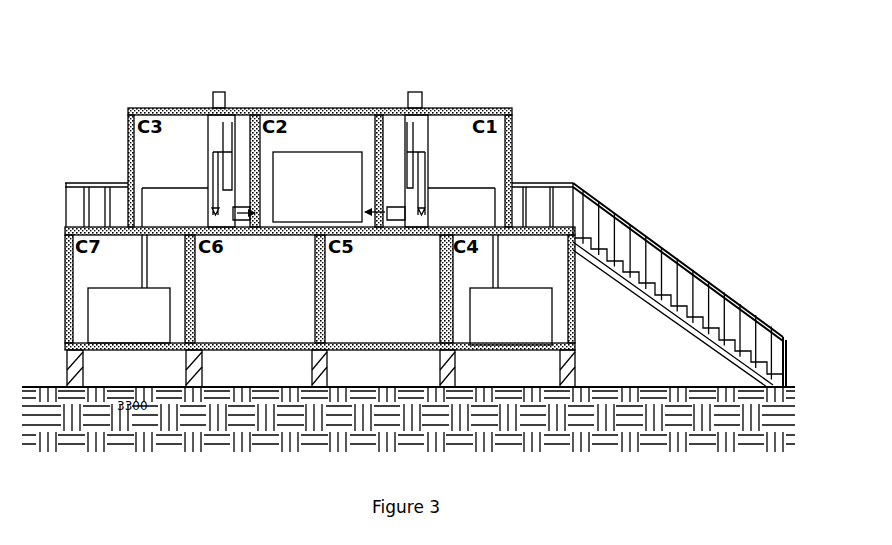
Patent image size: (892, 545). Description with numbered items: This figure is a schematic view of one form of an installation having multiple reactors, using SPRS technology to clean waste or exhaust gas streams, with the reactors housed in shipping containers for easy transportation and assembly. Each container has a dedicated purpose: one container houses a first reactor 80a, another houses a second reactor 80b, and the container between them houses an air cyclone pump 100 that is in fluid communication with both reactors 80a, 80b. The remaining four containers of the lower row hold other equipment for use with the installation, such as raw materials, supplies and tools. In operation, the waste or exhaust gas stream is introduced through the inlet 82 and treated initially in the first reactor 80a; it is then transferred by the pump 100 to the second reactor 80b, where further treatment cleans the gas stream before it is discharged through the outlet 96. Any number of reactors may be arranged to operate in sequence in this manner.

The outlet 96 is at (217, 90).
The inlet 82 is at (414, 90).
The pump 100 is at (335, 167).
The first reactor 80a is at (430, 140).
The second reactor 80b is at (210, 148).